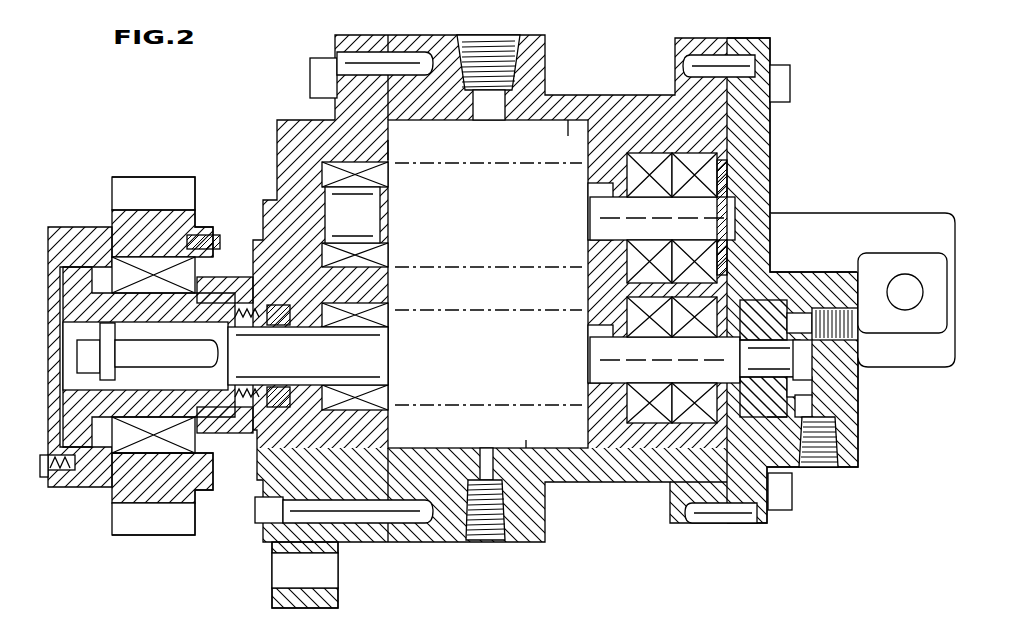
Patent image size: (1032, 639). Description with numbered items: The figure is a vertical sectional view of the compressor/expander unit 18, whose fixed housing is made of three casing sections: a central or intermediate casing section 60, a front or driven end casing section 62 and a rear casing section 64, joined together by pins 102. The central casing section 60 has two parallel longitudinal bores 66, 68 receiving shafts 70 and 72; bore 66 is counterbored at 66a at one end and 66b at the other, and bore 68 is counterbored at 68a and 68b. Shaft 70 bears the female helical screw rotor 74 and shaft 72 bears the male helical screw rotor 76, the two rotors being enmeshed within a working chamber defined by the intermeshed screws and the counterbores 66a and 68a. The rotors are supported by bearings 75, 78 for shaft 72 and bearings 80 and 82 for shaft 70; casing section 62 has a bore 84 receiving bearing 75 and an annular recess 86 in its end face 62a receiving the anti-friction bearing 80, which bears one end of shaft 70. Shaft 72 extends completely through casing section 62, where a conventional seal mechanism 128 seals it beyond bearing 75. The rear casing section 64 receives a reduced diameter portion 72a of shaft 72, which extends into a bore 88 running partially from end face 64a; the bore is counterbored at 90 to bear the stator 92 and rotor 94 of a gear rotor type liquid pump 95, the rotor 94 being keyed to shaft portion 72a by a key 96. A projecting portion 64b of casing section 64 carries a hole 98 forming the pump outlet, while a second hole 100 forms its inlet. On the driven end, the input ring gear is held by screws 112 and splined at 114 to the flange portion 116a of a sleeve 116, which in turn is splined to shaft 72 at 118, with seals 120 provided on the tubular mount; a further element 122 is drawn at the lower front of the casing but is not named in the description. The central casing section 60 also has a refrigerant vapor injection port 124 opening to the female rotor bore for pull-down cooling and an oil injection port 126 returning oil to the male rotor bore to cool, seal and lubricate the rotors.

The compressor/expander unit 18 is at (545, 44).
The central or intermediate casing section 60 is at (585, 98).
The front or driven end casing section 62 is at (283, 136).
The end face 62a is at (332, 592).
The rear casing section 64 is at (762, 143).
The end face 64a is at (682, 481).
The projecting portion 64b is at (850, 414).
The bore 66 is at (590, 195).
The counterbore 66a is at (563, 137).
The counterbore 66b is at (683, 176).
The bore 68 is at (590, 338).
The counterbore 68a is at (528, 447).
The counterbore 68b is at (660, 300).
The shaft 70 is at (598, 213).
The shaft 72 is at (307, 356).
The reduced diameter portion 72a is at (705, 314).
The female helical screw rotor 74 is at (470, 154).
The bearing 75 is at (398, 316).
The male helical screw rotor 76 is at (497, 435).
The bearing 78 is at (787, 298).
The bearing 80 is at (378, 176).
The bearing 82 is at (718, 183).
The bore 84 is at (390, 308).
The annular recess 86 is at (388, 153).
The bore 88 is at (848, 357).
The counterbore 90 is at (800, 312).
The stator 92 is at (778, 420).
The rotor 94 is at (830, 380).
The gear rotor type liquid pump 95 is at (835, 278).
The key 96 is at (775, 350).
The hole 98 is at (845, 434).
The hole 100 is at (860, 318).
The pins 102 is at (420, 56).
The screws 112 is at (210, 234).
The spline 114 is at (88, 255).
The sleeve 116 is at (226, 432).
The flange portion 116a is at (80, 432).
The spline 118 is at (207, 357).
The seals 120 is at (240, 272).
The shim 122 is at (322, 563).
The refrigerant working fluid vapor injection port 124 is at (541, 117).
The oil injection port 126 is at (490, 466).
The seal mechanism 128 is at (307, 238).